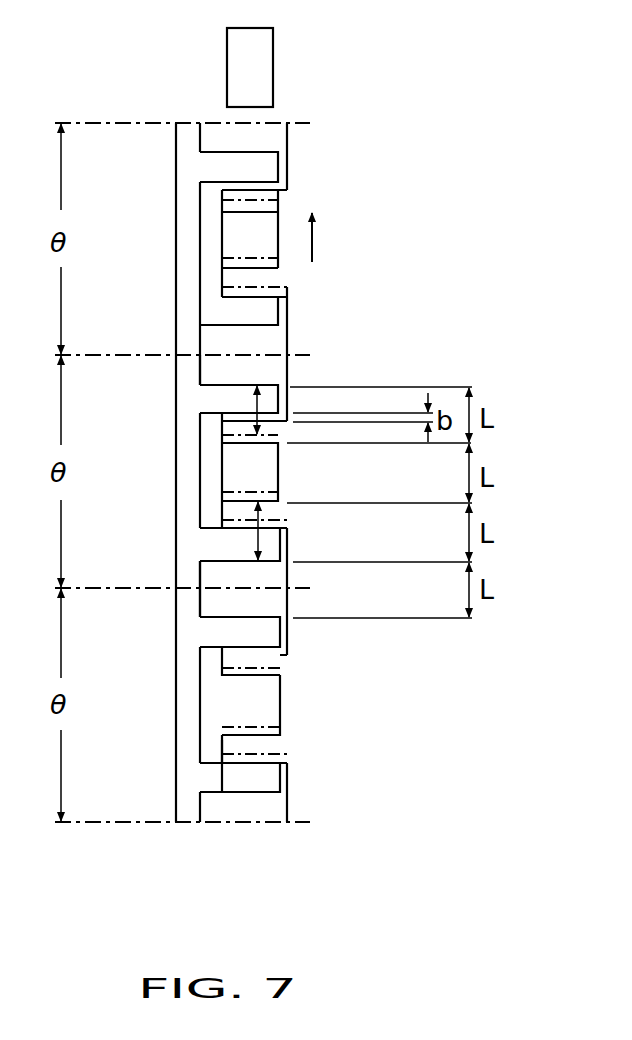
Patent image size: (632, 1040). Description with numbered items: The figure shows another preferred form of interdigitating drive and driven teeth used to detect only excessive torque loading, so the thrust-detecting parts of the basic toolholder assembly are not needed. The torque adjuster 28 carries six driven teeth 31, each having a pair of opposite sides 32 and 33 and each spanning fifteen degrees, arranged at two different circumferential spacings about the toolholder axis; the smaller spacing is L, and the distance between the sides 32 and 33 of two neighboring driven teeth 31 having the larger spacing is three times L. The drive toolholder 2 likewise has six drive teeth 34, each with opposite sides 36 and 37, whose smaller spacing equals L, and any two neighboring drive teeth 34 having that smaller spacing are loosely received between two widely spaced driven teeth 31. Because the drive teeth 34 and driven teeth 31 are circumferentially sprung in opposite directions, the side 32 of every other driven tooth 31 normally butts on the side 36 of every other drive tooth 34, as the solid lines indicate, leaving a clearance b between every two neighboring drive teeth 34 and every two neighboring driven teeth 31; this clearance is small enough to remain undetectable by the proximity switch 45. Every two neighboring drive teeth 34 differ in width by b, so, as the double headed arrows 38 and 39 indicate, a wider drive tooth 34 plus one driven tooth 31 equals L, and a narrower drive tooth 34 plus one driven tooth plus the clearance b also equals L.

The drive toolholder 2 is at (315, 130).
The torque adjuster 28 is at (188, 164).
The driven teeth 31 is at (268, 163).
The side of driven tooth 32 is at (205, 377).
The side of driven tooth 33 is at (215, 562).
The drive teeth 34 is at (222, 441).
The side of drive tooth 36 is at (230, 531).
The side of drive tooth 37 is at (228, 416).
The double headed arrow 38 is at (268, 396).
The double headed arrow 39 is at (280, 588).
The proximity switch 45 is at (265, 63).